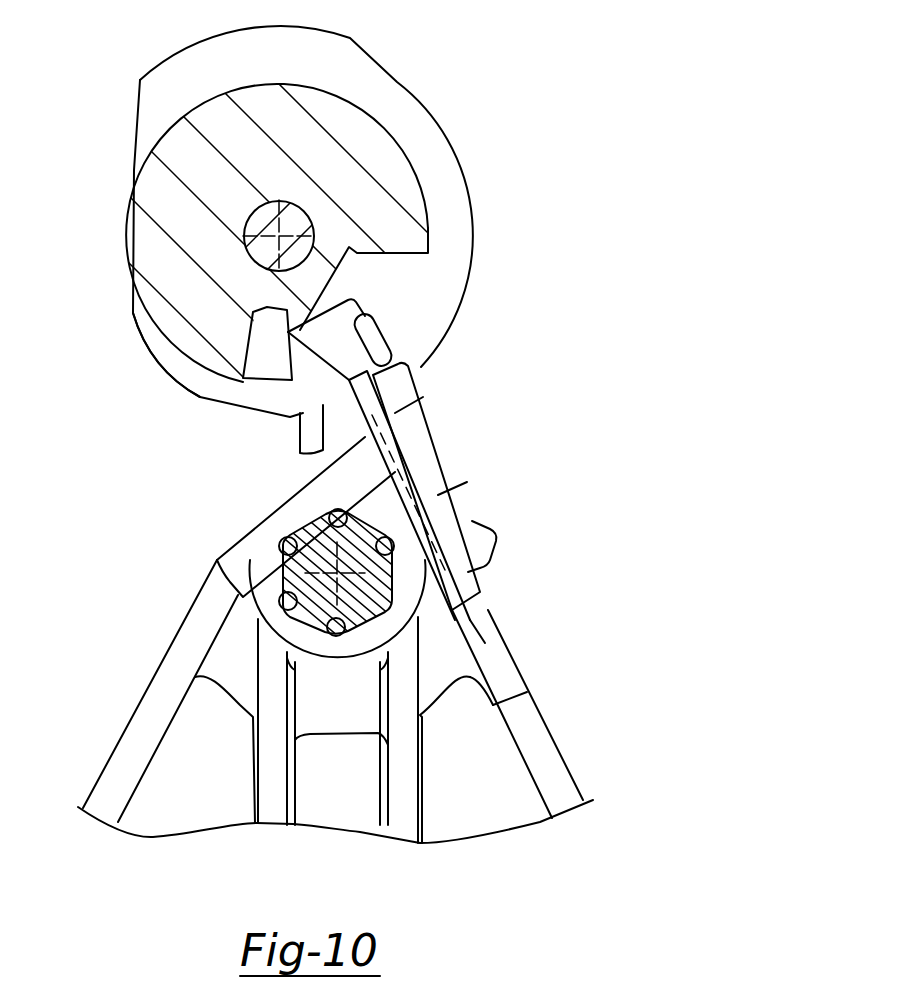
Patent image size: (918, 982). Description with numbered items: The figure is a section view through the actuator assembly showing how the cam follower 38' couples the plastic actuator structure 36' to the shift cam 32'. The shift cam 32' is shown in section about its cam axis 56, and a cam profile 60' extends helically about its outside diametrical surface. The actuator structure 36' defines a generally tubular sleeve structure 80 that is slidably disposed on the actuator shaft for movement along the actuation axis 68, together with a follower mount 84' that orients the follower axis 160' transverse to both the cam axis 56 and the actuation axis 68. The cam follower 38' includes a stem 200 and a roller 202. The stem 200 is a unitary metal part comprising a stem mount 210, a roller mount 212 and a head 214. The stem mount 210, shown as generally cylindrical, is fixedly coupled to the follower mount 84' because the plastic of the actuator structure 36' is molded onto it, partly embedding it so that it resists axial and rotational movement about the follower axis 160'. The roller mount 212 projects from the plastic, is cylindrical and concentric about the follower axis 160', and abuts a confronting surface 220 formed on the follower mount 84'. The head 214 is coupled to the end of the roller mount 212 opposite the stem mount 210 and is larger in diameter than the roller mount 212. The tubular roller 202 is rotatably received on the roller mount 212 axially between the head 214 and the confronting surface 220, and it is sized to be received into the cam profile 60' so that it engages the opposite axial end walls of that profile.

The shift cam 32' is at (305, 221).
The cam axis 56 is at (279, 236).
The cam profile 60' is at (455, 298).
The head 214 is at (300, 328).
The roller 202 is at (303, 377).
The roller mount 212 is at (357, 358).
The confronting surface 220 is at (302, 453).
The cam follower 38' is at (500, 422).
The sleeve structure 80 is at (257, 517).
The follower mount 84' is at (487, 486).
The stem mount 210 is at (427, 502).
The stem 200 is at (447, 540).
The actuation axis 68 is at (337, 573).
The follower axis 160' is at (559, 633).
The actuator structure 36' is at (307, 701).